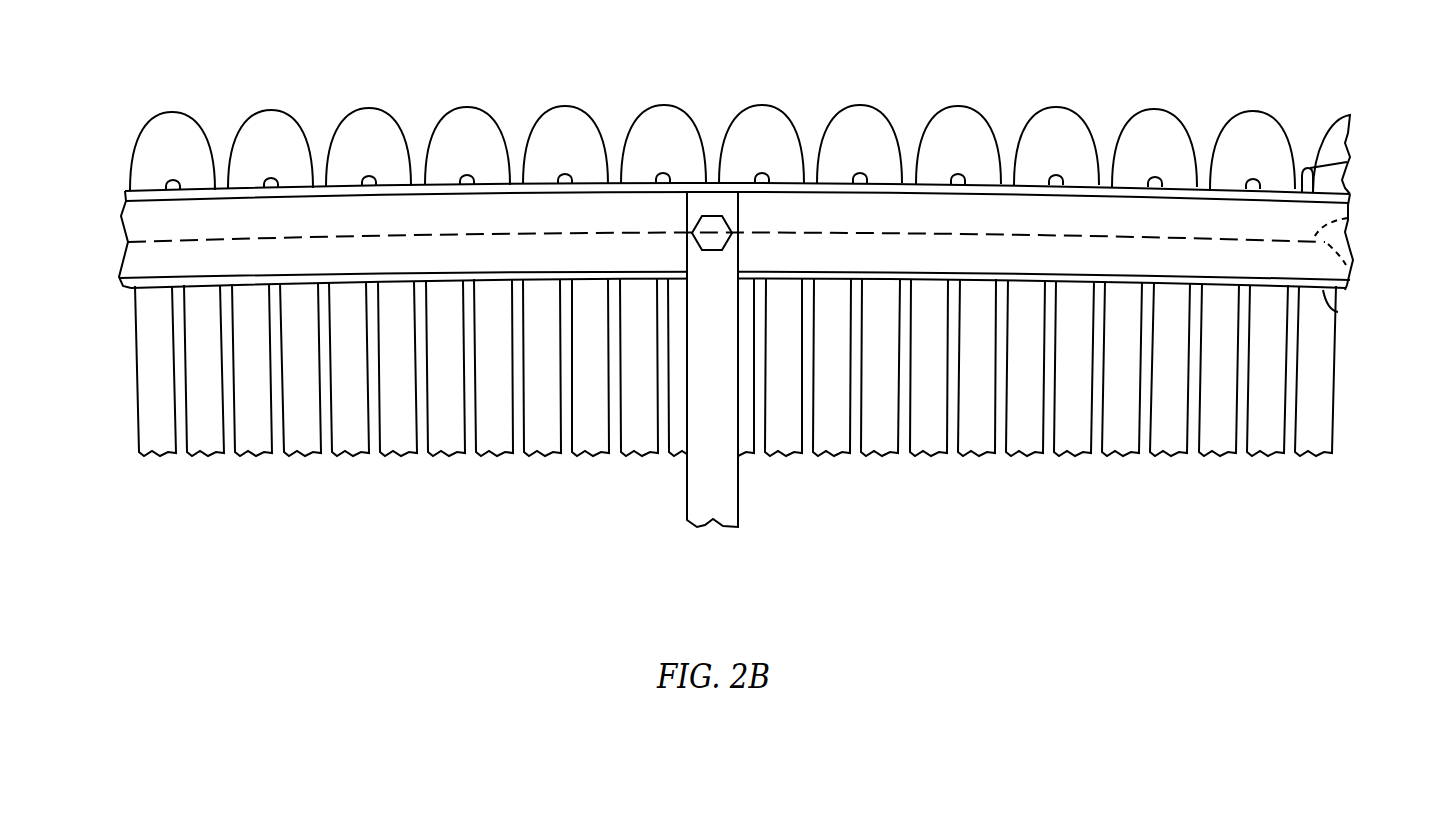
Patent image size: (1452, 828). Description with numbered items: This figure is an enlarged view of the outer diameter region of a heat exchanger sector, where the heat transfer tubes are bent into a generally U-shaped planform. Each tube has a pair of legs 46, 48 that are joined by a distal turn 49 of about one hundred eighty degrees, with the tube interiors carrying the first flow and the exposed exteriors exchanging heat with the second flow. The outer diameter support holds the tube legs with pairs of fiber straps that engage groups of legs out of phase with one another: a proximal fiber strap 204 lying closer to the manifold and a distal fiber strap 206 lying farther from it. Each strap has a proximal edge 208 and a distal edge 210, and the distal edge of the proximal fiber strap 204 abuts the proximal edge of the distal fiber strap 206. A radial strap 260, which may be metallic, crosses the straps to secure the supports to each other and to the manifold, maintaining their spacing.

The leg 46 is at (207, 435).
The leg 48 is at (153, 435).
The distal turn 49 is at (184, 143).
The proximal fiber strap 204 is at (1262, 270).
The distal fiber strap 206 is at (1152, 218).
The proximal edge 208 is at (1352, 266).
The distal edge 210 is at (1347, 163).
The radial strap 260 is at (707, 309).